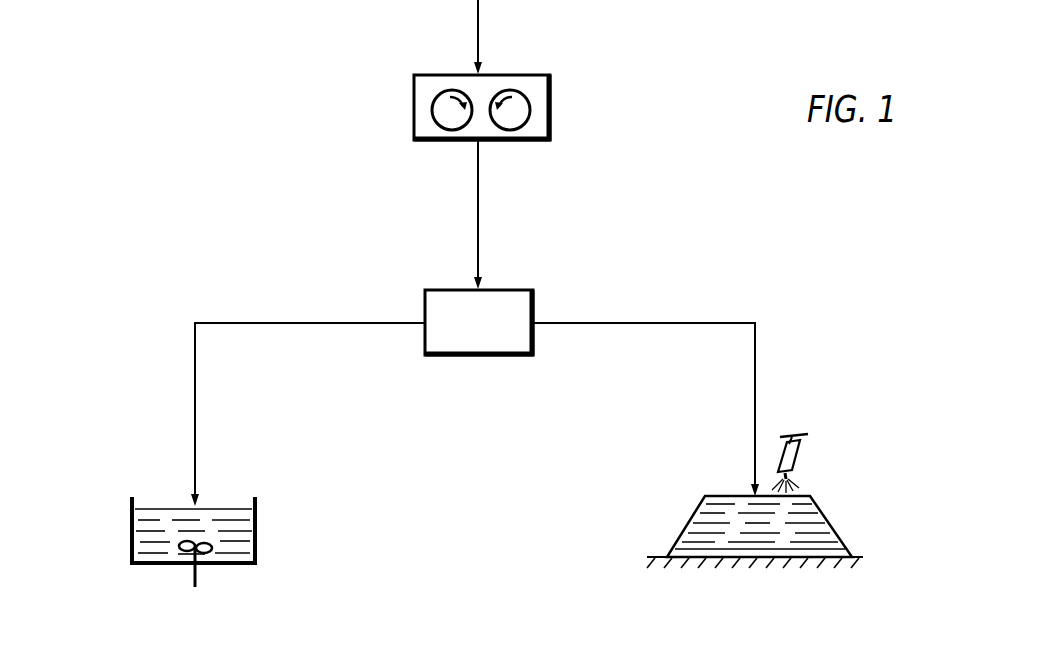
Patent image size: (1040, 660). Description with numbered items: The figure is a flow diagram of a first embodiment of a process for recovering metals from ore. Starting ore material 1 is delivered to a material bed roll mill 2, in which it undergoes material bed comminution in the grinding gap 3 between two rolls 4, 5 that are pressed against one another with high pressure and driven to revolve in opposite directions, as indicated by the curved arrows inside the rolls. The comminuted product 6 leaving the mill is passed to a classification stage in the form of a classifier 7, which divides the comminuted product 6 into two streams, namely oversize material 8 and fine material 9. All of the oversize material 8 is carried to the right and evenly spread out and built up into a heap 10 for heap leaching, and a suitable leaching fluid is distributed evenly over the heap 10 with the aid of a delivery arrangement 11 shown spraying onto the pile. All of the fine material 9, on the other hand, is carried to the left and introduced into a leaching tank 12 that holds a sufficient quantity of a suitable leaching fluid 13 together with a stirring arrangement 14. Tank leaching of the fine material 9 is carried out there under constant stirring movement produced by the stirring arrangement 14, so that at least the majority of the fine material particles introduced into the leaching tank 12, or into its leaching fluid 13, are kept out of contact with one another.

The starting ore material 1 is at (478, 23).
The material bed roll mill 2 is at (556, 86).
The grinding gap 3 is at (480, 110).
The roll 4 is at (440, 110).
The roll 5 is at (520, 111).
The comminuted product 6 is at (478, 205).
The classifier 7 is at (522, 284).
The oversize material 8 is at (755, 405).
The fine material 9 is at (195, 405).
The heap 10 is at (829, 509).
The delivery arrangement 11 is at (800, 454).
The leaching tank 12 is at (262, 524).
The leaching fluid 13 is at (225, 515).
The stirring arrangement 14 is at (182, 545).